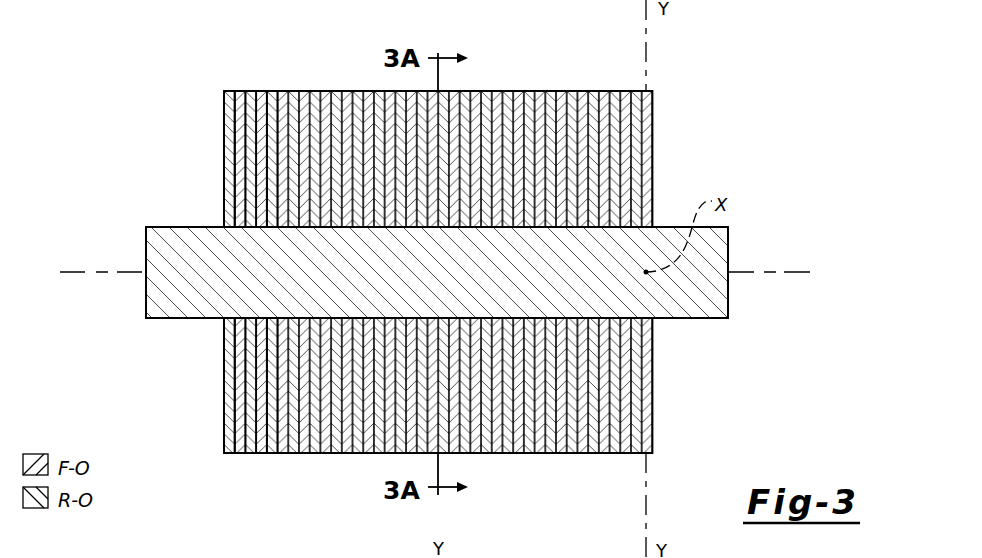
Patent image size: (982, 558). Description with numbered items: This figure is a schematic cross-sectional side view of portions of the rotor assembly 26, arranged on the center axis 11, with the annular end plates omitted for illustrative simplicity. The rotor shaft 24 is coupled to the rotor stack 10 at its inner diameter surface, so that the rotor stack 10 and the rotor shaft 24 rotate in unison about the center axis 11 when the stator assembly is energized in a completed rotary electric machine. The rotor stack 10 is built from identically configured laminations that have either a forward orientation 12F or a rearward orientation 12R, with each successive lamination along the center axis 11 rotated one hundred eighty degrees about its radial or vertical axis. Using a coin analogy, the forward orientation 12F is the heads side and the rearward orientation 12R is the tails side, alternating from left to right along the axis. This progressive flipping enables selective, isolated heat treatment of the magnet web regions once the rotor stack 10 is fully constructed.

The rotor stack 10 is at (414, 270).
The center axis 11 is at (78, 270).
The forward orientation 12F is at (226, 108).
The rearward orientation 12R is at (241, 100).
The rotor shaft 24 is at (183, 250).
The rotor assembly 26 is at (698, 137).